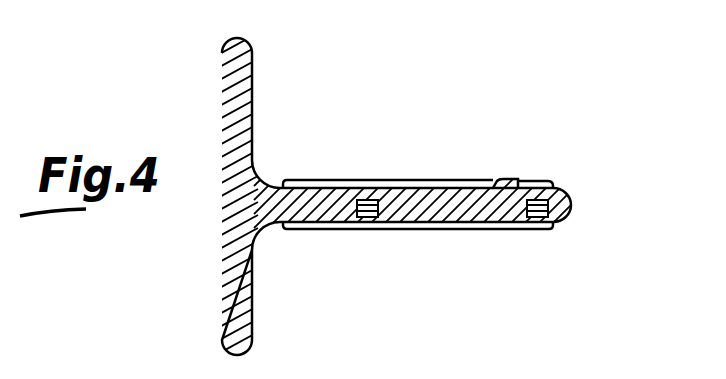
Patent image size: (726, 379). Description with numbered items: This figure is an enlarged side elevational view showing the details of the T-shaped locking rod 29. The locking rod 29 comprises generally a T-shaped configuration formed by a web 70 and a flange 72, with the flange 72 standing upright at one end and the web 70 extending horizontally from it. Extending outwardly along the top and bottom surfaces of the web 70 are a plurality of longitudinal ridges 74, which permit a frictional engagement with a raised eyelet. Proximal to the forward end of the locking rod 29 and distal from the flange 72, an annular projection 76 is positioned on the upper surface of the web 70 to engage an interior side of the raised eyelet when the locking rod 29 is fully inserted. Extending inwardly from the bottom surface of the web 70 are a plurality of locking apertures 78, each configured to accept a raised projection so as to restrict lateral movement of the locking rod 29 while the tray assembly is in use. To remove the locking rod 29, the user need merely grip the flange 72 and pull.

The locking rod 29 is at (470, 110).
The web 70 is at (576, 200).
The flange 72 is at (222, 60).
The longitudinal ridges 74 is at (366, 181).
The annular projection 76 is at (508, 180).
The locking apertures 78 is at (540, 230).